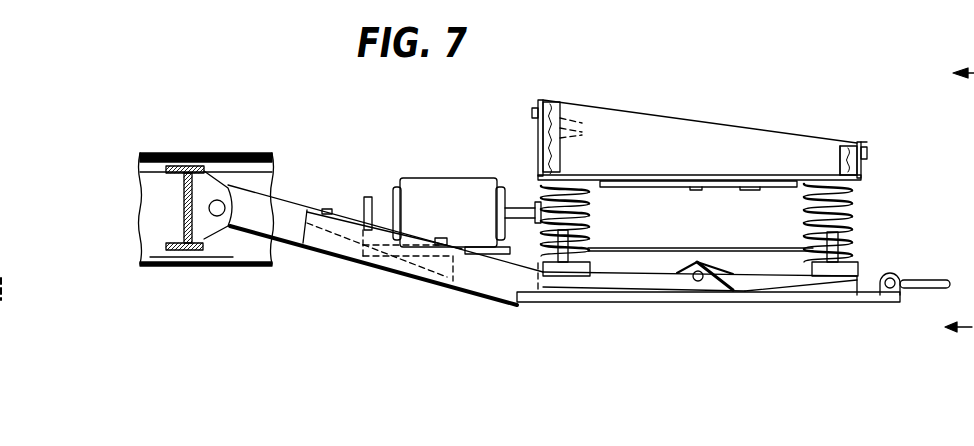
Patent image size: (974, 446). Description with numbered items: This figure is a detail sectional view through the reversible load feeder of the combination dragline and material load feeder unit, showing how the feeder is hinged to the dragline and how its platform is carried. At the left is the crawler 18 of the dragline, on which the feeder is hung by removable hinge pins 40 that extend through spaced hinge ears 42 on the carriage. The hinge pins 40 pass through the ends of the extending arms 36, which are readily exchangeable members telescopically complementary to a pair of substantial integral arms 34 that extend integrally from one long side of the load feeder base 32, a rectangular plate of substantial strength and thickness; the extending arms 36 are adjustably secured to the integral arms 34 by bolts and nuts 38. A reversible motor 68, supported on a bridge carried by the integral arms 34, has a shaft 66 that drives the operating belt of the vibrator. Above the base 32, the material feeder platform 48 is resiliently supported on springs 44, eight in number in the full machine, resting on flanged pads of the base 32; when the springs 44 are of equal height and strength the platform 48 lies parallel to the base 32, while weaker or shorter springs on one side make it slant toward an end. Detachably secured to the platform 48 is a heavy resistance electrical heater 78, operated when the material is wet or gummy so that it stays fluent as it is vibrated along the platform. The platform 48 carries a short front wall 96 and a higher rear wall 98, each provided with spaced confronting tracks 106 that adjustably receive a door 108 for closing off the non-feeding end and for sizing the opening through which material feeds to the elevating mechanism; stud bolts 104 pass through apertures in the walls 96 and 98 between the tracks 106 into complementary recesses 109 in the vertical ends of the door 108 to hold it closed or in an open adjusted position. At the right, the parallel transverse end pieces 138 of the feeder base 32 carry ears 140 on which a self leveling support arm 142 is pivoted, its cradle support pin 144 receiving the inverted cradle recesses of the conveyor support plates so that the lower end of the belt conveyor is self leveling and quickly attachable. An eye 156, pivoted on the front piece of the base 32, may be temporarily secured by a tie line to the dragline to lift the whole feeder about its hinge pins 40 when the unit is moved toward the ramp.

The crawler 18 is at (186, 152).
The hinge ears 42 is at (264, 172).
The hinge pins 40 is at (225, 209).
The extending arms 36 is at (290, 236).
The integral arms 34 is at (485, 287).
The bolts and nuts 38 is at (444, 237).
The reversible motor 68 is at (448, 183).
The shaft 66 is at (521, 207).
The rear wall 98 is at (537, 138).
The door 108 is at (704, 110).
The feeder platform 48 is at (722, 176).
The tracks 106 is at (556, 110).
The recesses 109 is at (840, 157).
The stud bolts 104 is at (533, 110).
The front wall 96 is at (867, 141).
The resistance electrical heater 78 is at (648, 187).
The springs 44 is at (588, 214).
The cradle support pins 144 is at (848, 244).
The self leveling support arms 142 is at (658, 282).
The ears 140 is at (709, 290).
The transverse end pieces 138 is at (812, 296).
The feeder base 32 is at (790, 302).
The eye 156 is at (932, 280).